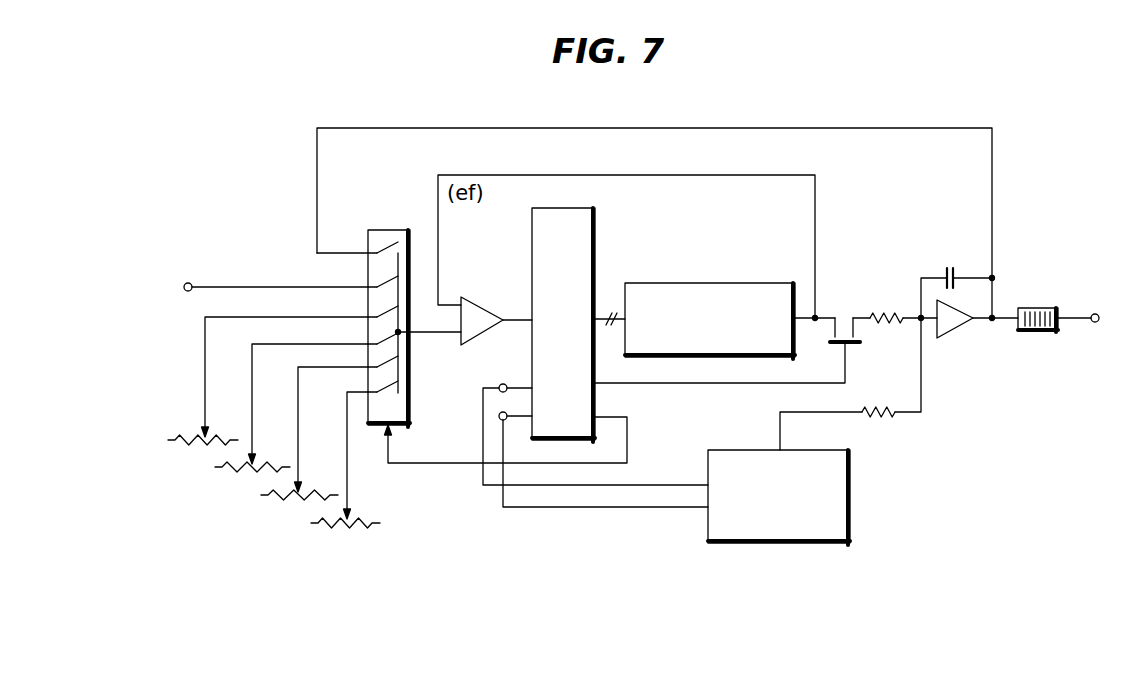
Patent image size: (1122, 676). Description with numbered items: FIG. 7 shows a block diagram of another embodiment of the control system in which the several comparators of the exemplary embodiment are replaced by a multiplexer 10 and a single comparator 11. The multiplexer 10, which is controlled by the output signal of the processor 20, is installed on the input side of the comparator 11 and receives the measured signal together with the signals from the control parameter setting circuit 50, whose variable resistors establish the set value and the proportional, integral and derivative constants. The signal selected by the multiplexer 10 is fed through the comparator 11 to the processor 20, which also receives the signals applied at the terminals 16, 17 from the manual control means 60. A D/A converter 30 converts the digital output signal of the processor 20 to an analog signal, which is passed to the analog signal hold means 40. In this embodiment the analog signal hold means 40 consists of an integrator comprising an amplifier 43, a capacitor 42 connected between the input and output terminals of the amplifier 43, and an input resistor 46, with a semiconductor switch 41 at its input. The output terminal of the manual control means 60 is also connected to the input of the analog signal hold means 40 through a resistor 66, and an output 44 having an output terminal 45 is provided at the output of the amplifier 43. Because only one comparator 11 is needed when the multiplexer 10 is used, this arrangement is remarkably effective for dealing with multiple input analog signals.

The multiplexer 10 is at (386, 230).
The comparator 11 is at (478, 308).
The comparator 16 is at (503, 383).
The terminal 17 is at (498, 416).
The processor 20 is at (595, 225).
The D/A converter 30 is at (740, 283).
The analog signal hold means 40 is at (901, 289).
The semiconductor switch 41 is at (845, 330).
The capacitor 42 is at (949, 268).
The amplifier 43 is at (952, 338).
The output 44 is at (1034, 331).
The output terminal 45 is at (1095, 323).
The input resistor 46 is at (887, 316).
The control parameter setting circuit 50 is at (208, 494).
The manual control means 60 is at (851, 463).
The resistor 66 is at (878, 407).